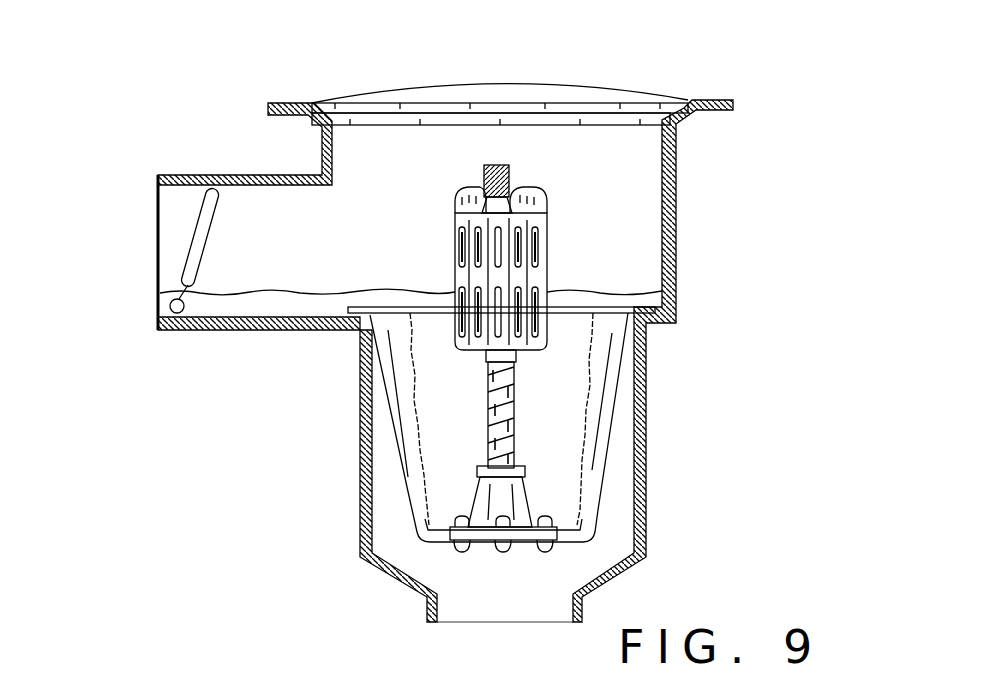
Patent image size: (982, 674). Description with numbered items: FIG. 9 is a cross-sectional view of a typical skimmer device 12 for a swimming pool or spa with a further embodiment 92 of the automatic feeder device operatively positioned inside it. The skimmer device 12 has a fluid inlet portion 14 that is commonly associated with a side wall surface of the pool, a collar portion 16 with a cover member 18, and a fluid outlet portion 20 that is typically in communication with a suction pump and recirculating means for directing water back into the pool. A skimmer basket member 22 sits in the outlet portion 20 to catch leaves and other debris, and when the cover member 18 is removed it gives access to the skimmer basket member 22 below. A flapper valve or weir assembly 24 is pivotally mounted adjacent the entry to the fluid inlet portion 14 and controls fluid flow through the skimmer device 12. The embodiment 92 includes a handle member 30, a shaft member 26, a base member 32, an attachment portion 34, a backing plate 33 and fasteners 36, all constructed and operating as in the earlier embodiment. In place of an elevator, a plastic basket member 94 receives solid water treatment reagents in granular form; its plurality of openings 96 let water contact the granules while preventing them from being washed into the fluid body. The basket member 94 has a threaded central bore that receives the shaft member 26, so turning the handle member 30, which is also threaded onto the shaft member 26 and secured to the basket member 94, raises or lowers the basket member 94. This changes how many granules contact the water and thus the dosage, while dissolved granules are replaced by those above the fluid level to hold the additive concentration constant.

The skimmer device 12 is at (262, 70).
The fluid inlet portion 14 is at (158, 247).
The collar portion 16 is at (310, 128).
The cover member 18 is at (625, 88).
The fluid outlet portion 20 is at (425, 603).
The skimmer basket member 22 is at (595, 496).
The flapper valve or weir assembly 24 is at (206, 246).
The shaft member 26 is at (510, 178).
The handle member 30 is at (544, 190).
The base member 32 is at (528, 498).
The backing plate 33 is at (520, 552).
The attachment portion 34 is at (476, 478).
The fasteners 36 is at (462, 553).
The embodiment 92 is at (421, 207).
The basket member 94 is at (550, 276).
The openings 96 is at (521, 246).